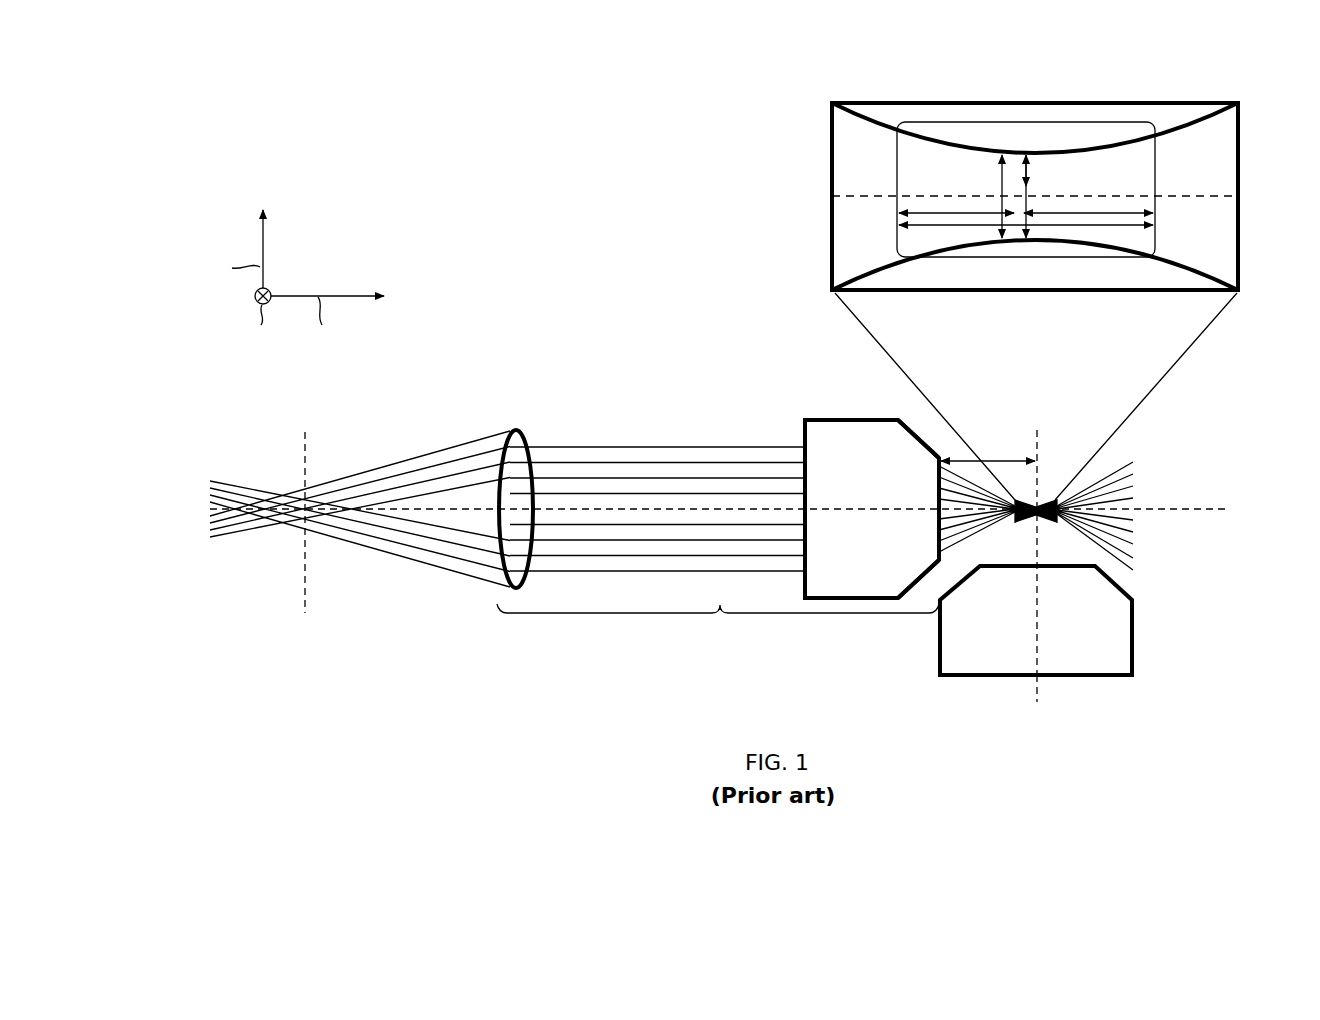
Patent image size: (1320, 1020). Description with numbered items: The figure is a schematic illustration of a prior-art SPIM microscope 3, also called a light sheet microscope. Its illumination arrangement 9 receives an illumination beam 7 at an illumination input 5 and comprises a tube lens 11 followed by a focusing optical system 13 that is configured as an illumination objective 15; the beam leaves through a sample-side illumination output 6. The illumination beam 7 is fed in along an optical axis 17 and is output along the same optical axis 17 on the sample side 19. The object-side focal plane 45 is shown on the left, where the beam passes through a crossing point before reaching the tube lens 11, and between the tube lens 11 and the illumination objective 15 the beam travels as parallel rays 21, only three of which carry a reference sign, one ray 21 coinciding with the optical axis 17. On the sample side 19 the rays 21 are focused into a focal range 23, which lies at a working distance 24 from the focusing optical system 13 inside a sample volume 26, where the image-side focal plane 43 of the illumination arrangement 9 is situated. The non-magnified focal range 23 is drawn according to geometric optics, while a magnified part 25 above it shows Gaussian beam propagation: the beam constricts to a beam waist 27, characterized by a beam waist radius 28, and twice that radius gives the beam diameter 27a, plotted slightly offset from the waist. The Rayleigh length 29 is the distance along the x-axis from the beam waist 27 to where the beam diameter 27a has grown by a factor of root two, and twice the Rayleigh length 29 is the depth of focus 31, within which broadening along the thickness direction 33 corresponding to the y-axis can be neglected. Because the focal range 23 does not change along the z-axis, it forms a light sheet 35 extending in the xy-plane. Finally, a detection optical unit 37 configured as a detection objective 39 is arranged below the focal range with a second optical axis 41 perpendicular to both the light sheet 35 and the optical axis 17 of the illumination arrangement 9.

The SPIM microscope 3 is at (505, 222).
The illumination input 5 is at (494, 483).
The sample-side illumination output 6 is at (946, 560).
The illumination beam 7 is at (421, 470).
The illumination arrangement 9 is at (718, 624).
The tube lens 11 is at (516, 431).
The focusing optical system 13 is at (860, 494).
The illumination objective 15 is at (840, 420).
The optical axis 17 is at (240, 500).
The sample side 19 is at (936, 434).
The rays 21 is at (563, 447).
The focal range 23 is at (1045, 525).
The working distance 24 is at (985, 459).
The magnified part 25 is at (835, 230).
The sample volume 26 is at (1048, 494).
The beam waist 27 is at (1031, 150).
The beam diameter 27a is at (1156, 150).
The beam waist radius 28 is at (1031, 182).
The Rayleigh length 29 is at (960, 212).
The depth of focus 31 is at (1078, 227).
The thickness direction 33 is at (266, 246).
The light sheet 35 is at (1045, 523).
The detection optical unit 37 is at (990, 620).
The detection objective 39 is at (940, 658).
The second optical axis 41 is at (1035, 693).
The image-side focal plane 43 is at (1037, 438).
The object-side focal plane 45 is at (306, 432).